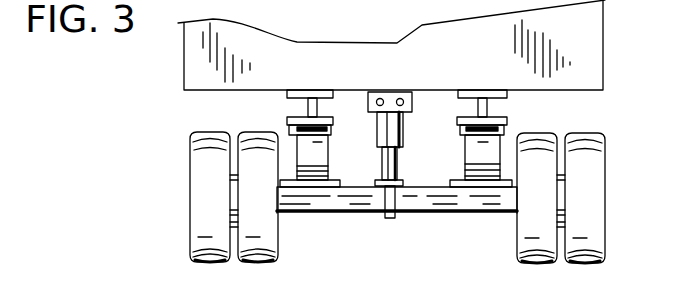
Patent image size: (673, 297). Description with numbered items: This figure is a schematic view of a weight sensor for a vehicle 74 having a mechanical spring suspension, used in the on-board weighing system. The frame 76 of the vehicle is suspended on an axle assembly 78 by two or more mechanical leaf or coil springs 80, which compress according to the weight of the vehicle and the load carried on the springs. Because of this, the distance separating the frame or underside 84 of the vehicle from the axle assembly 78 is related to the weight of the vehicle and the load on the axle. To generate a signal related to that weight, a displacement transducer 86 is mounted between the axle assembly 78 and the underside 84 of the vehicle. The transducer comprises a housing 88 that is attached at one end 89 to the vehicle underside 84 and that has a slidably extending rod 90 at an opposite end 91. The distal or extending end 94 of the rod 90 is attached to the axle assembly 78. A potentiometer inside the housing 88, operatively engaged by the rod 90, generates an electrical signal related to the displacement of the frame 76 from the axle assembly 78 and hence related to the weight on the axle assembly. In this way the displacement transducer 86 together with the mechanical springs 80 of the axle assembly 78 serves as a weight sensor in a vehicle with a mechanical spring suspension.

The vehicle 74 is at (603, 30).
The frame 76 is at (507, 102).
The axle assembly 78 is at (483, 213).
The mechanical leaf or coil springs 80 is at (295, 163).
The underside 84 is at (347, 102).
The displacement transducer 86 is at (404, 128).
The housing 88 is at (403, 126).
The one end 89 is at (385, 95).
The rod 90 is at (397, 167).
The opposite end 91 is at (378, 152).
The distal or extending end 94 is at (383, 190).